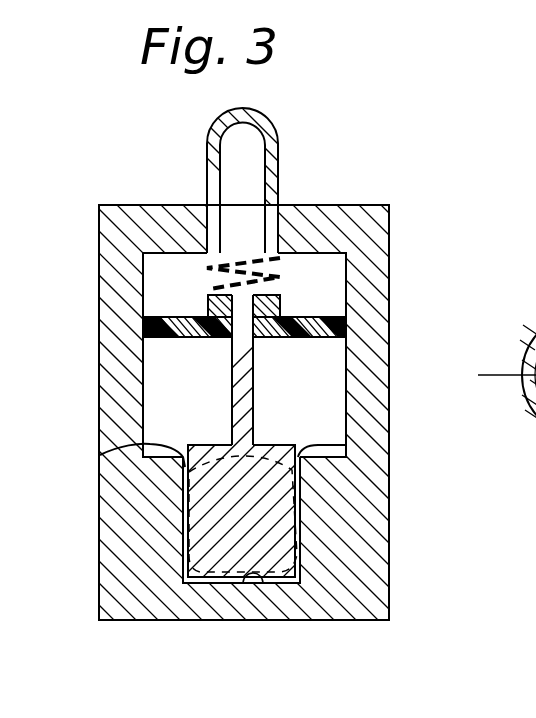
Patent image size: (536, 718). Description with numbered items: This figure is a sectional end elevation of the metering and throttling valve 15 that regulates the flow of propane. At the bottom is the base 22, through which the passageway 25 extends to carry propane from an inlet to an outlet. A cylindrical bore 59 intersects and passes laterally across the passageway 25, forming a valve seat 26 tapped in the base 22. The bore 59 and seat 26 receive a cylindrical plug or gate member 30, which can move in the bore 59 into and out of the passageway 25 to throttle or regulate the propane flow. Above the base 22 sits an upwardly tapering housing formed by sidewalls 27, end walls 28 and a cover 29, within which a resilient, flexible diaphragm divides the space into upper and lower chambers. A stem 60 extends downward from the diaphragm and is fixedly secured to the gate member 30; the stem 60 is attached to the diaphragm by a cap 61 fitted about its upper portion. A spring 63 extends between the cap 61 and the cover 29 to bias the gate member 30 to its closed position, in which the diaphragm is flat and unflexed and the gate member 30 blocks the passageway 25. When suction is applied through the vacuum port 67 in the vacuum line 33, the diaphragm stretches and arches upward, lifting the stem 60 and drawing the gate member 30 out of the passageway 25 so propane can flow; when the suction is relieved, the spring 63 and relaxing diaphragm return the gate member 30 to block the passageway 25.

The metering and throttling valve 15 is at (410, 583).
The base 22 is at (112, 528).
The passageway 25 is at (305, 510).
The valve seat 26 is at (247, 572).
The sidewalls 27 is at (120, 312).
The end walls 28 is at (315, 380).
The cover 29 is at (158, 205).
The gate member 30 is at (202, 525).
The vacuum line 33 is at (245, 145).
The cylindrical bore 59 is at (100, 455).
The stem 60 is at (240, 365).
The cap 61 is at (280, 302).
The spring 63 is at (205, 265).
The vacuum port 67 is at (272, 165).